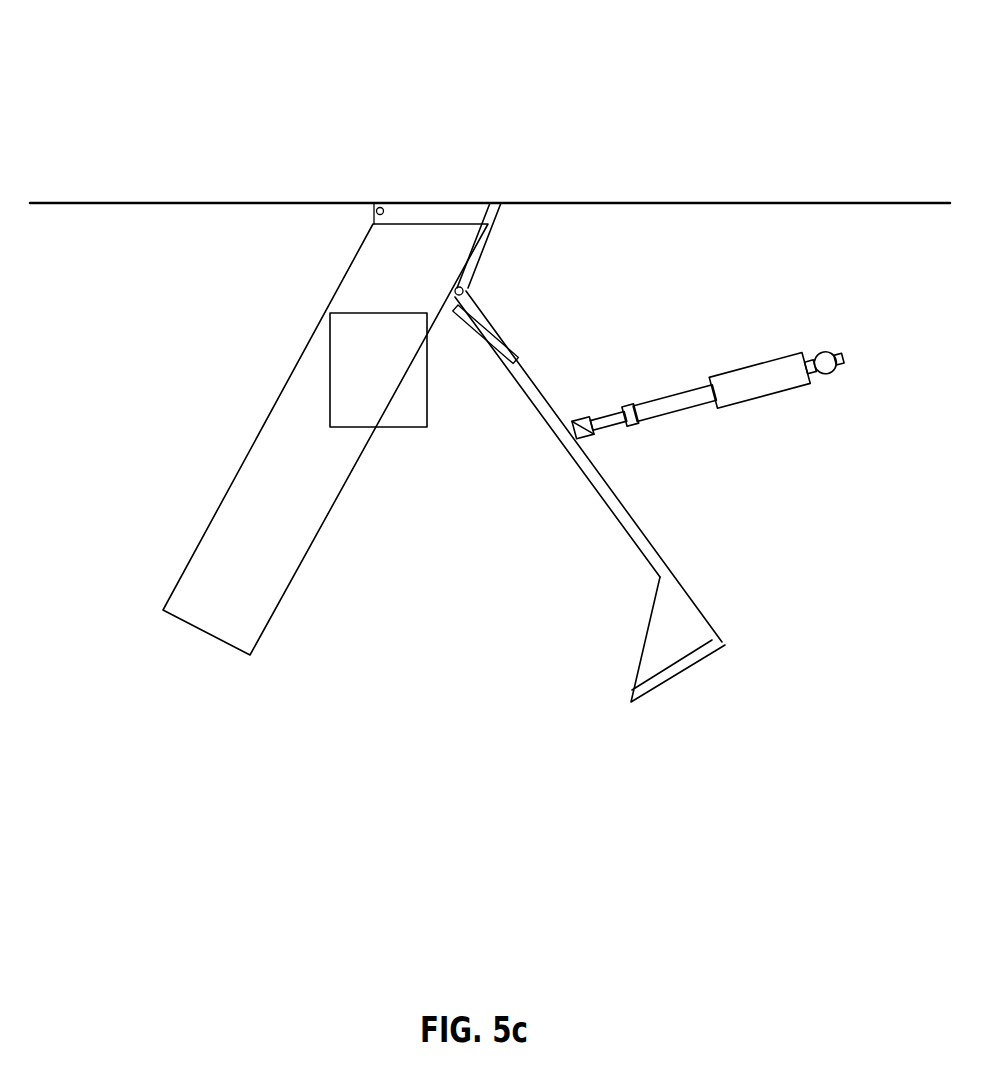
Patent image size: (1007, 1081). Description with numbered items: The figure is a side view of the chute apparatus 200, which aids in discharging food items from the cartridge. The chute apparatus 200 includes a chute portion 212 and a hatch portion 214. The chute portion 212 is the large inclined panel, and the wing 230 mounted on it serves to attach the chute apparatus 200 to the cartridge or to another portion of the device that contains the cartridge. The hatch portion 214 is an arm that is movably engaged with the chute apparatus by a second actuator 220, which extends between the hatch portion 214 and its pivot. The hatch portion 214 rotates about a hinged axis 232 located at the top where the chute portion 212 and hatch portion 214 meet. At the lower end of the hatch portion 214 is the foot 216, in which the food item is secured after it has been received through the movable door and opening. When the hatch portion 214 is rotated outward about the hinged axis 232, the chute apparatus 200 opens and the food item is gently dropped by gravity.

The chute apparatus 200 is at (337, 153).
The chute portion 212 is at (238, 492).
The hatch portion 214 is at (652, 548).
The foot 216 is at (690, 651).
The second actuator 220 is at (806, 357).
The wing 230 is at (333, 370).
The hinged axis 232 is at (462, 295).